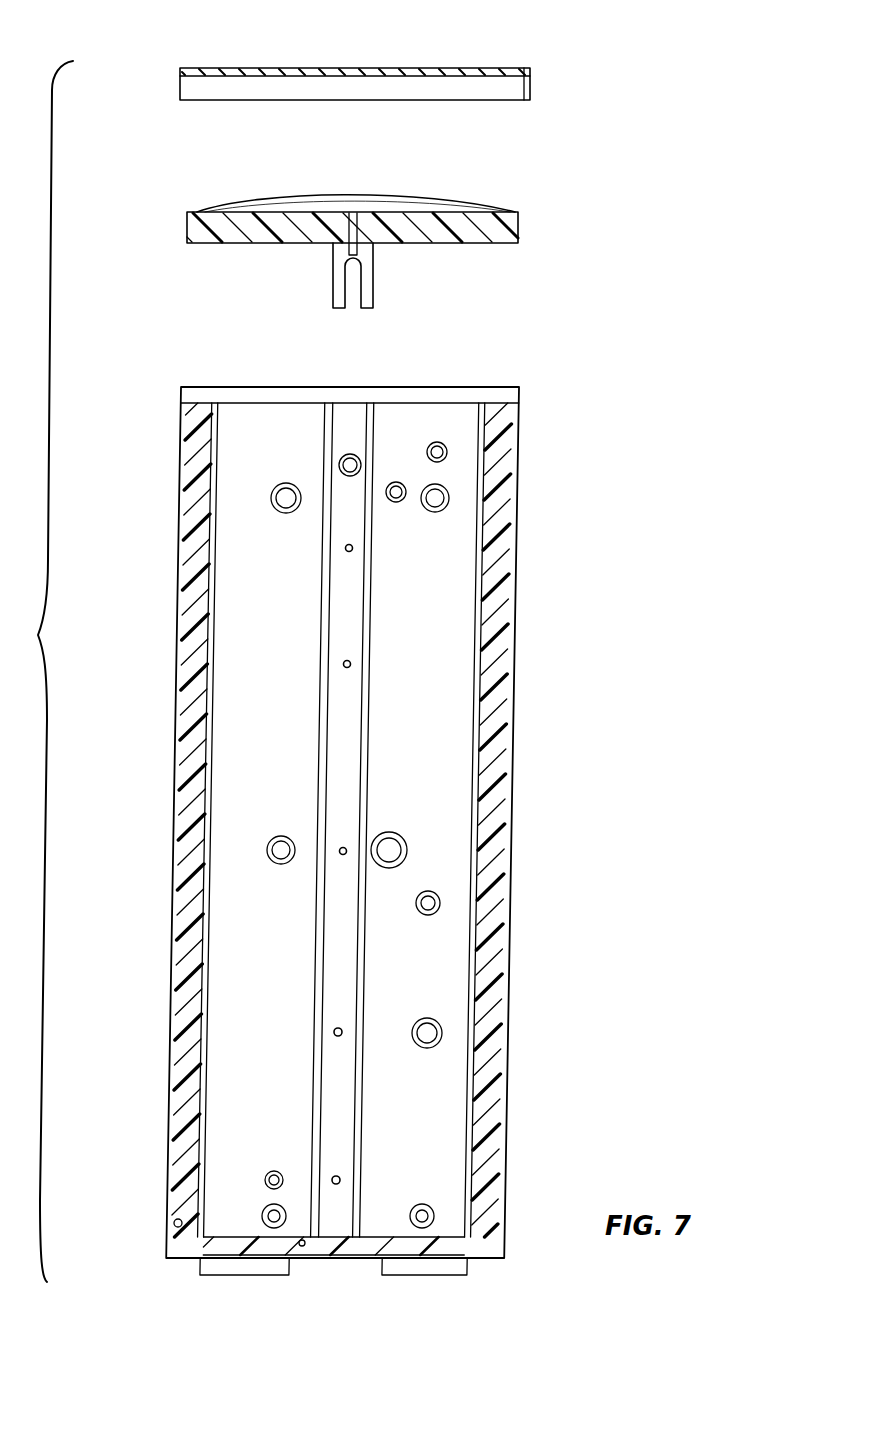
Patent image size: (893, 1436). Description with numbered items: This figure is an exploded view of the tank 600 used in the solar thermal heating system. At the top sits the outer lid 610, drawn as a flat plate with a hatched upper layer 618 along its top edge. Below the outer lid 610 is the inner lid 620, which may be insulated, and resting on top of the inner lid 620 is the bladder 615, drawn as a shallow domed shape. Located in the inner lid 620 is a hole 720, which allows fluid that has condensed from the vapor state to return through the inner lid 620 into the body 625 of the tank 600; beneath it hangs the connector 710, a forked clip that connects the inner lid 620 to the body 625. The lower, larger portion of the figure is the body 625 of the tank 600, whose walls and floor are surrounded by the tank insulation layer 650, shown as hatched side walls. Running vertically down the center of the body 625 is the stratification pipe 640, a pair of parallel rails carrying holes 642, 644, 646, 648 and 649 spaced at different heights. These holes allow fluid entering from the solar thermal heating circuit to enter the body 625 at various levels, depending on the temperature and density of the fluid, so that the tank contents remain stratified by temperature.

The tank 600 is at (648, 158).
The outer lid 610 is at (530, 86).
The cover plate layer 618 is at (300, 42).
The bladder 615 is at (384, 206).
The inner lid 620 is at (520, 228).
The hole 720 is at (347, 233).
The connector 710 is at (365, 288).
The body 625 is at (272, 750).
The tank insulation layer 650 is at (197, 620).
The stratification pipe 640 is at (346, 765).
The hole 642 is at (353, 547).
The hole 644 is at (351, 664).
The hole 646 is at (345, 847).
The hole 648 is at (341, 1028).
The hole 649 is at (341, 1179).